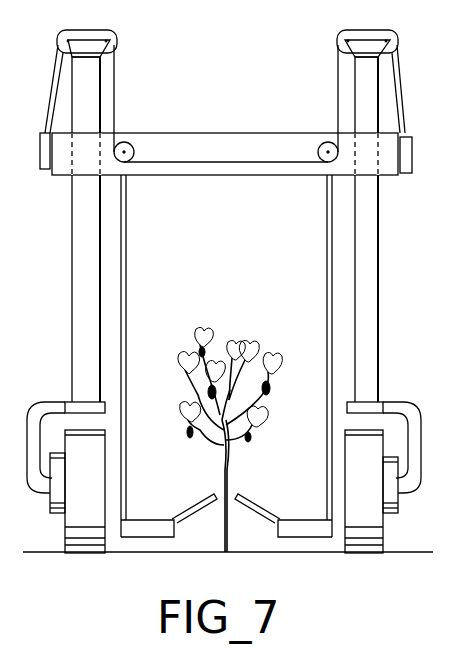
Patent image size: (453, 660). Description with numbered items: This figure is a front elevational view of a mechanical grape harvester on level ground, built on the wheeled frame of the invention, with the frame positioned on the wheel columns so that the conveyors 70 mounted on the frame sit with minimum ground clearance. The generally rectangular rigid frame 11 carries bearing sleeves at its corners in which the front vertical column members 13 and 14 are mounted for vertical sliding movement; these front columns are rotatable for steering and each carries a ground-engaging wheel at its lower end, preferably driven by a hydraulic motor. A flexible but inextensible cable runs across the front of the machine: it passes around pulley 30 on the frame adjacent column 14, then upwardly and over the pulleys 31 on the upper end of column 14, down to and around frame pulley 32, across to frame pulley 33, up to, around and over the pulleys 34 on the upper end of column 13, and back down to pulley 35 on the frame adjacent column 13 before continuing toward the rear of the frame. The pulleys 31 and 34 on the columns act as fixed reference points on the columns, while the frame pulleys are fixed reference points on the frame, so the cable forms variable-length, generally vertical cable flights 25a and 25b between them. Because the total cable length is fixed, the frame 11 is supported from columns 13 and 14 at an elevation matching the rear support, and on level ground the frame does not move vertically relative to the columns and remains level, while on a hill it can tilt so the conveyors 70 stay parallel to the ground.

The rigid frame 11 is at (248, 130).
The column member 13 is at (358, 272).
The column member 14 is at (90, 286).
The cable flight 25a is at (400, 80).
The cable flight 25b is at (58, 76).
The pulley 30 is at (42, 163).
The pulleys 31 is at (73, 26).
The frame pulley 32 is at (118, 147).
The frame pulley 33 is at (329, 145).
The pulleys 34 is at (387, 32).
The pulley 35 is at (413, 168).
The conveyors 70 is at (165, 523).